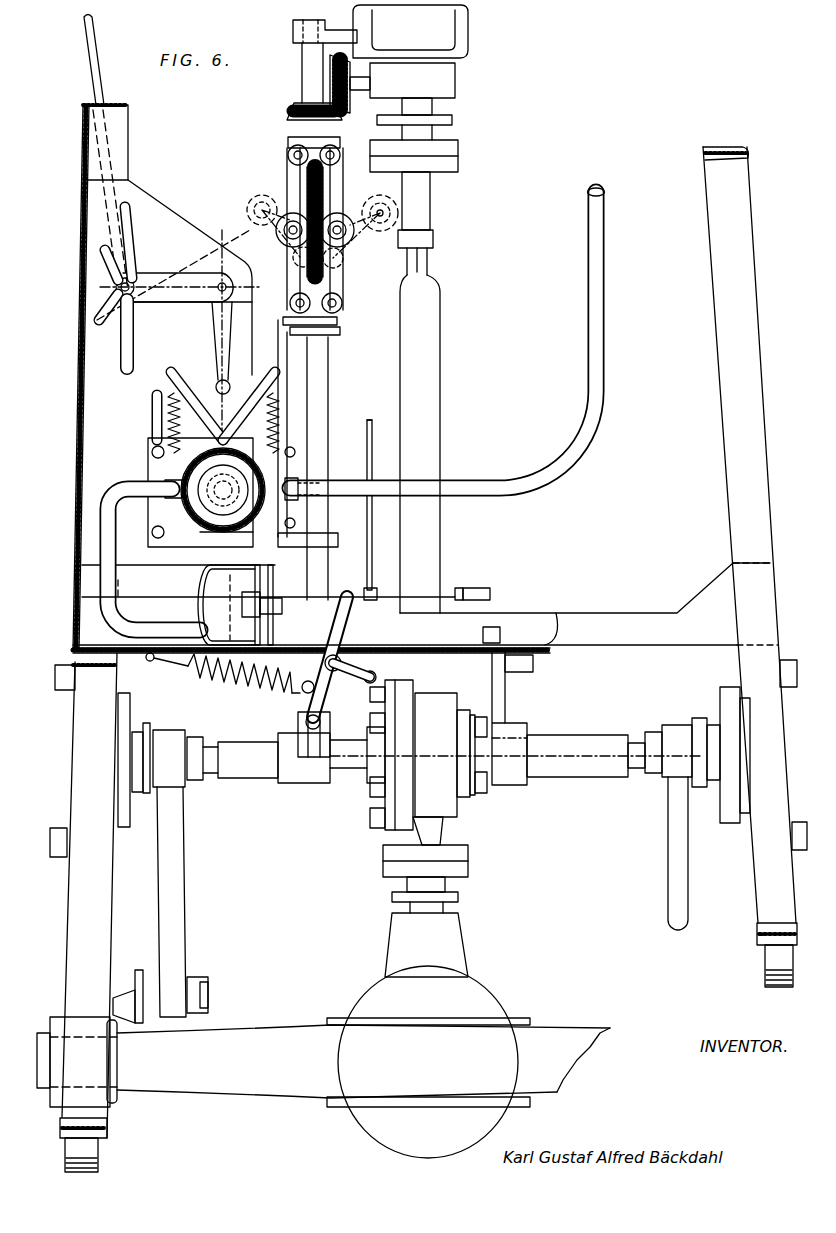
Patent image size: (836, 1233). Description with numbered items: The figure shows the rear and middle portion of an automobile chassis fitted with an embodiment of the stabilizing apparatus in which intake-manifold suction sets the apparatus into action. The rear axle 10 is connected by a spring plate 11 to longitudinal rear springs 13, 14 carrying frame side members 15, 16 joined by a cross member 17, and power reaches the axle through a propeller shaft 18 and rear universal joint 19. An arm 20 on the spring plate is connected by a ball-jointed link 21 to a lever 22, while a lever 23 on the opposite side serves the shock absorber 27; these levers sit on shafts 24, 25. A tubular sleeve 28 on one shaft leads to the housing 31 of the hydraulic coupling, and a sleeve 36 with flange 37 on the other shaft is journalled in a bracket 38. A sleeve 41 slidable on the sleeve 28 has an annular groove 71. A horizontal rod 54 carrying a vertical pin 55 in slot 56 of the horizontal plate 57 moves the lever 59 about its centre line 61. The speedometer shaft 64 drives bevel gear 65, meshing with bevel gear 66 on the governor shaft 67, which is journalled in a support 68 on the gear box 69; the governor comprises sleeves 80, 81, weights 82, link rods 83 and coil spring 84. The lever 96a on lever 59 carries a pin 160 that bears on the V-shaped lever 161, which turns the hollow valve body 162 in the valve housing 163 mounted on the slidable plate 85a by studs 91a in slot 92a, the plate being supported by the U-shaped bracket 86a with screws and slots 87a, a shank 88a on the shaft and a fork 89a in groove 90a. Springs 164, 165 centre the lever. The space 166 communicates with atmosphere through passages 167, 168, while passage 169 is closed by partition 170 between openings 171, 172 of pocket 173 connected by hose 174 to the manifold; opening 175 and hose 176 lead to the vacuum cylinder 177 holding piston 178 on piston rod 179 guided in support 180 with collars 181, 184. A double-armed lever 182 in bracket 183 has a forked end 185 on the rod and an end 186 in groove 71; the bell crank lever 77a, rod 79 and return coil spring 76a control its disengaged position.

The rear axle 10 is at (363, 1062).
The spring plate 11 is at (108, 1095).
The longitudinal rear spring 13 is at (82, 1150).
The longitudinal rear spring 14 is at (780, 955).
The frame side member 15 is at (77, 905).
The frame side member 16 is at (765, 900).
The cross member 17 is at (592, 620).
The propeller shaft 18 is at (420, 335).
The rear universal joint 19 is at (455, 868).
The arm 20 is at (110, 990).
The ball-jointed link 21 is at (162, 978).
The lever 22 is at (166, 895).
The lever 23 is at (678, 785).
The shaft 24 is at (212, 760).
The shaft 25 is at (635, 758).
The shock absorber 27 is at (737, 790).
The tubular shaft or sleeve 28 is at (262, 760).
The housing 31 is at (432, 782).
The sleeve 36 is at (547, 762).
The flange 37 is at (467, 765).
The bracket 38 is at (515, 695).
The sleeve 41 is at (318, 765).
The horizontal rod 54 is at (97, 73).
The vertical pin 55 is at (110, 297).
The slot 56 is at (132, 210).
The horizontal plate 57 is at (100, 225).
The lever 59 is at (136, 284).
The centre line 61 is at (166, 292).
The speedometer shaft 64 is at (372, 90).
The bevel gear 65 is at (352, 76).
The bevel gear 66 is at (289, 114).
The governor shaft 67 is at (320, 368).
The support 68 is at (305, 33).
The gear box 69 is at (422, 22).
The annular groove 71 is at (300, 735).
The return coil spring 76a is at (250, 690).
The manually actuated bell crank lever 77a is at (433, 697).
The rod 79 is at (374, 525).
The sleeve 80 is at (290, 148).
The sleeve 81 is at (338, 300).
The governor weights 82 is at (247, 210).
The link rods 83 is at (336, 268).
The coil spring 84 is at (306, 178).
The slidable plate 85a is at (172, 470).
The U-shaped bracket 86a is at (287, 420).
The screws and slots 87a is at (296, 480).
The shank 88a is at (322, 560).
The fork 89a is at (325, 333).
The annular groove 90a is at (320, 321).
The studs 91a is at (152, 452).
The slot 92a is at (135, 385).
The lever 96a is at (222, 328).
The pin 160 is at (267, 370).
The V-shaped lever 161 is at (277, 405).
The cylindrical hollow valve body 162 is at (277, 440).
The valve housing 163 is at (248, 520).
The coil spring 164 is at (374, 421).
The coil spring 165 is at (168, 415).
The space 166 is at (185, 510).
The passage 167 is at (208, 534).
The passage 168 is at (230, 580).
The passage 169 is at (292, 468).
The partition 170 is at (300, 490).
The opening 171 is at (283, 522).
The opening 172 is at (287, 455).
The pocket 173 is at (292, 540).
The flexible hose 174 is at (472, 487).
The opening 175 is at (165, 488).
The flexible hose 176 is at (100, 545).
The vacuum cylinder 177 is at (311, 641).
The piston 178 is at (170, 676).
The piston rod 179 is at (327, 604).
The support 180 is at (492, 595).
The collar 181 is at (380, 595).
The double-armed lever 182 is at (366, 625).
The bracket 183 is at (390, 660).
The collar 184 is at (462, 595).
The end 185 is at (328, 600).
The end 186 is at (300, 715).